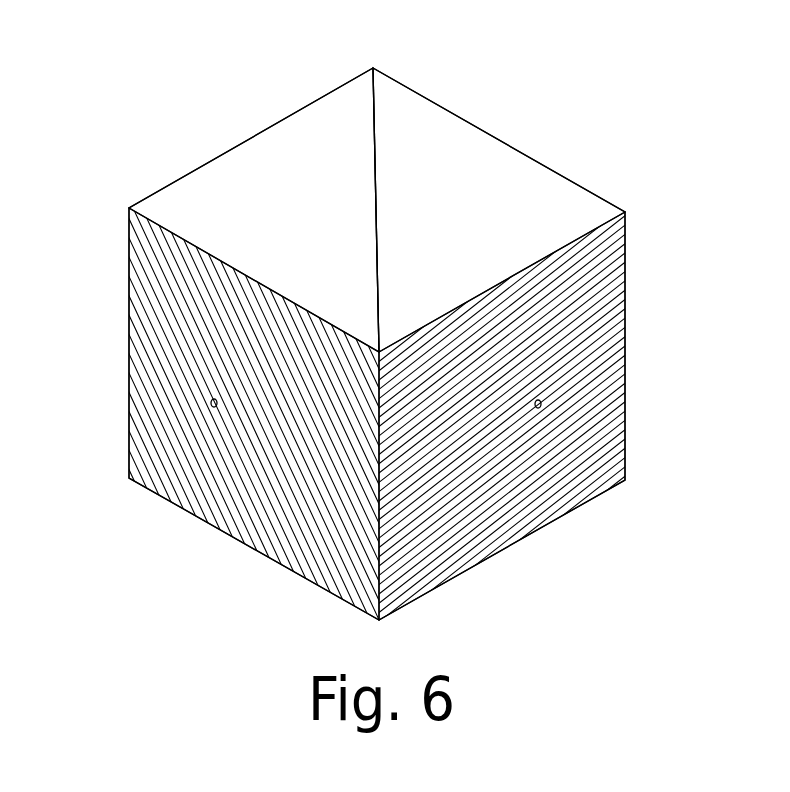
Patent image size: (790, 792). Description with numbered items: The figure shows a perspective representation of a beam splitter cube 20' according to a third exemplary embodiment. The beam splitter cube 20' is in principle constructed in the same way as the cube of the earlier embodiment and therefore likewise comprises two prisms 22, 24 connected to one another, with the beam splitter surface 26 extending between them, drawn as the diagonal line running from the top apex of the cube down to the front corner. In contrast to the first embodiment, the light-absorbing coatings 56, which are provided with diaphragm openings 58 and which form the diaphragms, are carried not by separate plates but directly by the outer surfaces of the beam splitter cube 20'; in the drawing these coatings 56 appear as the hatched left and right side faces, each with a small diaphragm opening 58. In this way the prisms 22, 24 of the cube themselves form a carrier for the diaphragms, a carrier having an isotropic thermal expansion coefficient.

The beam splitter cube 20' is at (355, 322).
The prism 22 is at (186, 193).
The prism 24 is at (537, 183).
The beam splitter surface 26 is at (377, 153).
The light-absorbing coating 56 is at (153, 312).
The diaphragm opening 58 is at (210, 406).